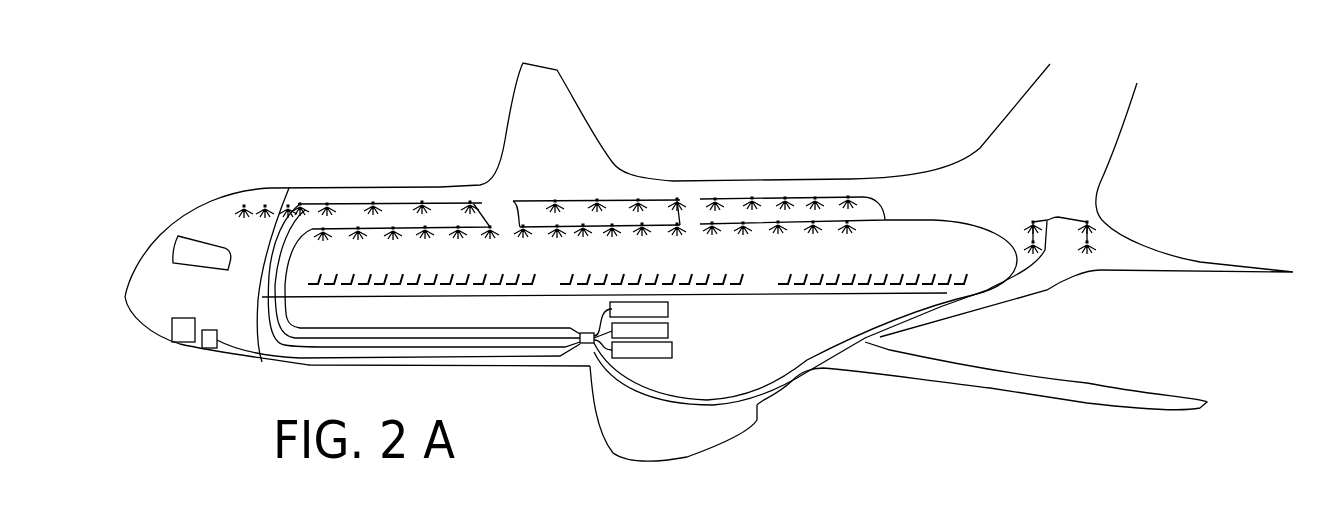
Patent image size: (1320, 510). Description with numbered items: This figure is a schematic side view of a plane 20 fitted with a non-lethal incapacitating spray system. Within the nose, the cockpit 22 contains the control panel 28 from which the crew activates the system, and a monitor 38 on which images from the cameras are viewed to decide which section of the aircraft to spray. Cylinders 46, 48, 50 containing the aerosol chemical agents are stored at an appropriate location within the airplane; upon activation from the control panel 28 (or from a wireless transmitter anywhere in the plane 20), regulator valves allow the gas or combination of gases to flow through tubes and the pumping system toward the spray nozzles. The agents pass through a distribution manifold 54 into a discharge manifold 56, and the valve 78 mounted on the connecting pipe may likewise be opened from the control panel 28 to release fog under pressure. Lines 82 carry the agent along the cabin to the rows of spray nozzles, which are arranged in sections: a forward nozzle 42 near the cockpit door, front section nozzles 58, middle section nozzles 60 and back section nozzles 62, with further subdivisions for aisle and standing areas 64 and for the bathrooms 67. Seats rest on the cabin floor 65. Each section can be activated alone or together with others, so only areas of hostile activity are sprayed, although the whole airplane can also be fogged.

The plane 20 is at (468, 135).
The cockpit 22 is at (220, 186).
The control panel 28 is at (209, 348).
The monitor 38 is at (185, 334).
The spray nozzle 42 is at (286, 210).
The cylinder 46 is at (647, 357).
The cylinder 48 is at (668, 332).
The cylinder 50 is at (668, 309).
The distribution manifold 54 is at (655, 228).
The discharge manifold 56 is at (333, 363).
The front section spray nozzles 58 is at (423, 202).
The middle section spray nozzles 60 is at (678, 200).
The back section spray nozzles 62 is at (849, 197).
The aisle and standing area section 64 is at (848, 278).
The cabin floor 65 is at (912, 292).
The bathroom section 67 is at (1088, 221).
The valve 78 is at (584, 341).
The distribution conduit 82 is at (530, 202).